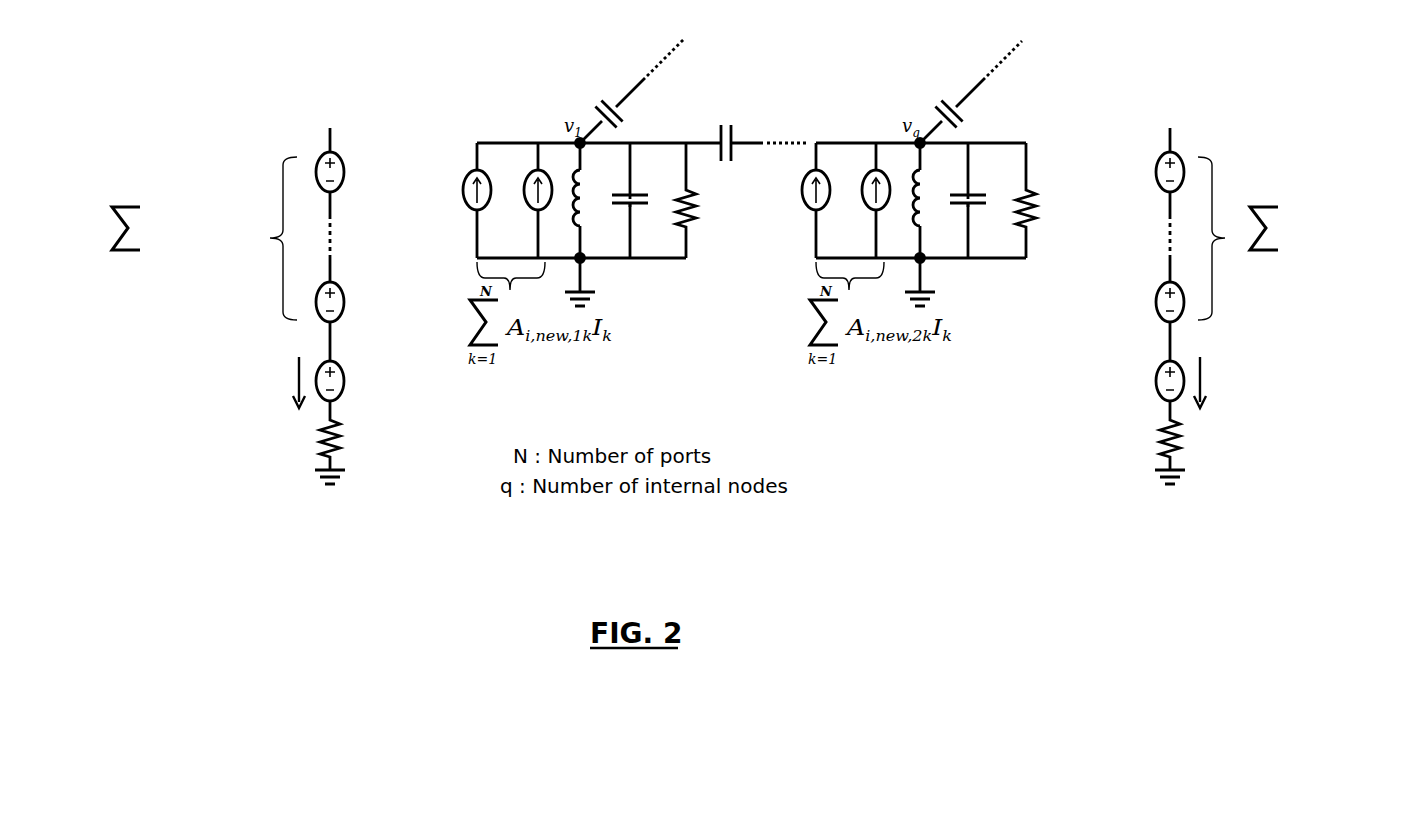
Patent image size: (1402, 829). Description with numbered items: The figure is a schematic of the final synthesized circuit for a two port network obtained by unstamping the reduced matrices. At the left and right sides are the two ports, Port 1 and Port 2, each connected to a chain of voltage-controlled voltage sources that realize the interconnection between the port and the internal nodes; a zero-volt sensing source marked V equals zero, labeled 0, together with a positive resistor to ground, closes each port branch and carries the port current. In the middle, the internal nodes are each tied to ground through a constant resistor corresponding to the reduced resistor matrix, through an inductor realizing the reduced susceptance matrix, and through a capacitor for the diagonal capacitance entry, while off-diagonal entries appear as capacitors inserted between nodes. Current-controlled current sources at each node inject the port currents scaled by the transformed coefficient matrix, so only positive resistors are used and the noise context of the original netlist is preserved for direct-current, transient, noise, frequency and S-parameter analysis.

The port 1 voltage-controlled voltage source branch 1 is at (330, 128).
The port 2 voltage-controlled voltage source branch 2 is at (1170, 128).
The zero-volt sensing voltage source with termination resistor 0 is at (750, 422).